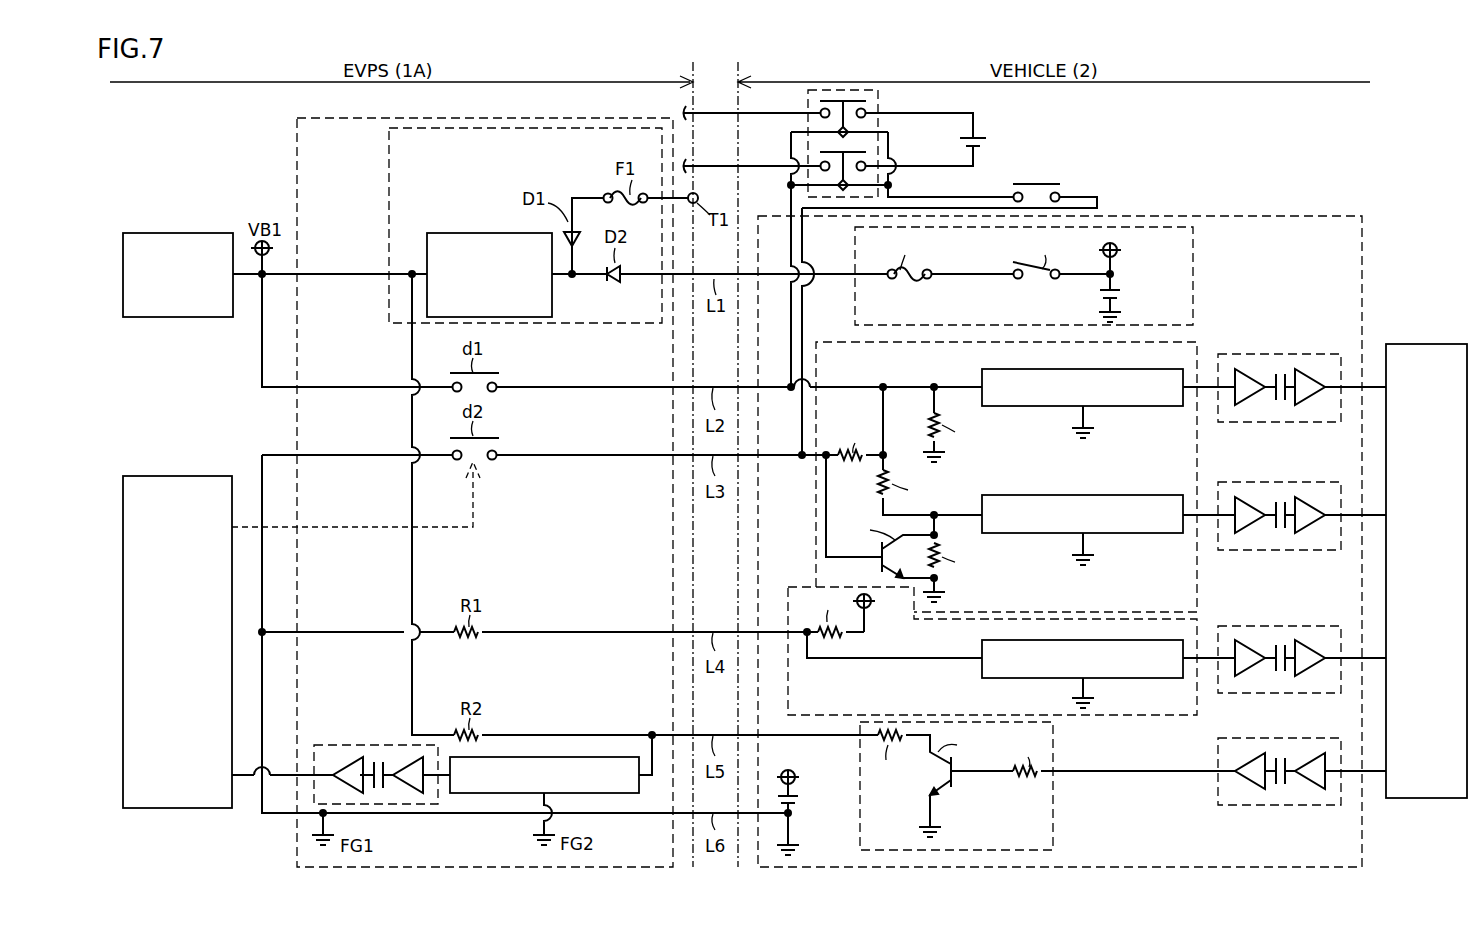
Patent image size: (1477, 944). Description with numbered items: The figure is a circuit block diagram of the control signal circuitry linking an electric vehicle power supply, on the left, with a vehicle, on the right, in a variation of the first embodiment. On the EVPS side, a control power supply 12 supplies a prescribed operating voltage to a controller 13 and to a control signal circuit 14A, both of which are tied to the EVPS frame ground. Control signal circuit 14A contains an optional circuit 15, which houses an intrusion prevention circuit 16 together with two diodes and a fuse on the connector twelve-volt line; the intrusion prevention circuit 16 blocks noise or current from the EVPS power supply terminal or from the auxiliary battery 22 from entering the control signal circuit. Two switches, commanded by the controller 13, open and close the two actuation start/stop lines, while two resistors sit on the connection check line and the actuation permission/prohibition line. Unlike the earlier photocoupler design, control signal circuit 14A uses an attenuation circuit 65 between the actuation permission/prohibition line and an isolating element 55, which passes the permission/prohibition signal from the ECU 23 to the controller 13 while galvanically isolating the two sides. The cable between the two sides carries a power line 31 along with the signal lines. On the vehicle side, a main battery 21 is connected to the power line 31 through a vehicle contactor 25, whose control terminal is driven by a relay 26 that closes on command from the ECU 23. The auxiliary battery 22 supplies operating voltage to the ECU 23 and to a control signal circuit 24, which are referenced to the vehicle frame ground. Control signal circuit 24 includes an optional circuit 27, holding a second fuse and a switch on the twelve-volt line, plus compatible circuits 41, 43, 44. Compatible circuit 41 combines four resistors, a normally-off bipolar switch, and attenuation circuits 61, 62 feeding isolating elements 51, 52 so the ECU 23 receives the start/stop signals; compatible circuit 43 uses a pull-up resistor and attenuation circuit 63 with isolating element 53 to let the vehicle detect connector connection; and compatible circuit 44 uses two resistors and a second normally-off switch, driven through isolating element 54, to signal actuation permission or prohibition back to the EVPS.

The control power supply 12 is at (170, 233).
The controller 13 is at (180, 476).
The control signal circuit 14A is at (668, 100).
The optional circuit 15 is at (570, 128).
The intrusion prevention circuit 16 is at (455, 233).
The main battery 21 is at (985, 136).
The auxiliary battery 22 is at (1120, 297).
The ECU 23 is at (1420, 344).
The control signal circuit 24 is at (1300, 216).
The vehicle contactor 25 is at (878, 100).
The relay 26 is at (1040, 184).
The optional circuit 27 is at (1150, 227).
The power line 31 is at (720, 178).
The compatible circuit 41 is at (1197, 580).
The compatible circuit 43 is at (1165, 715).
The compatible circuit 44 is at (1053, 810).
The isolating element 51 is at (1283, 354).
The isolating element 52 is at (1283, 482).
The isolating element 53 is at (1283, 626).
The isolating element 54 is at (1283, 738).
The isolating element 55 is at (360, 745).
The attenuation circuit 61 is at (1085, 369).
The attenuation circuit 62 is at (1085, 495).
The attenuation circuit 63 is at (1085, 640).
The attenuation circuit 65 is at (639, 790).